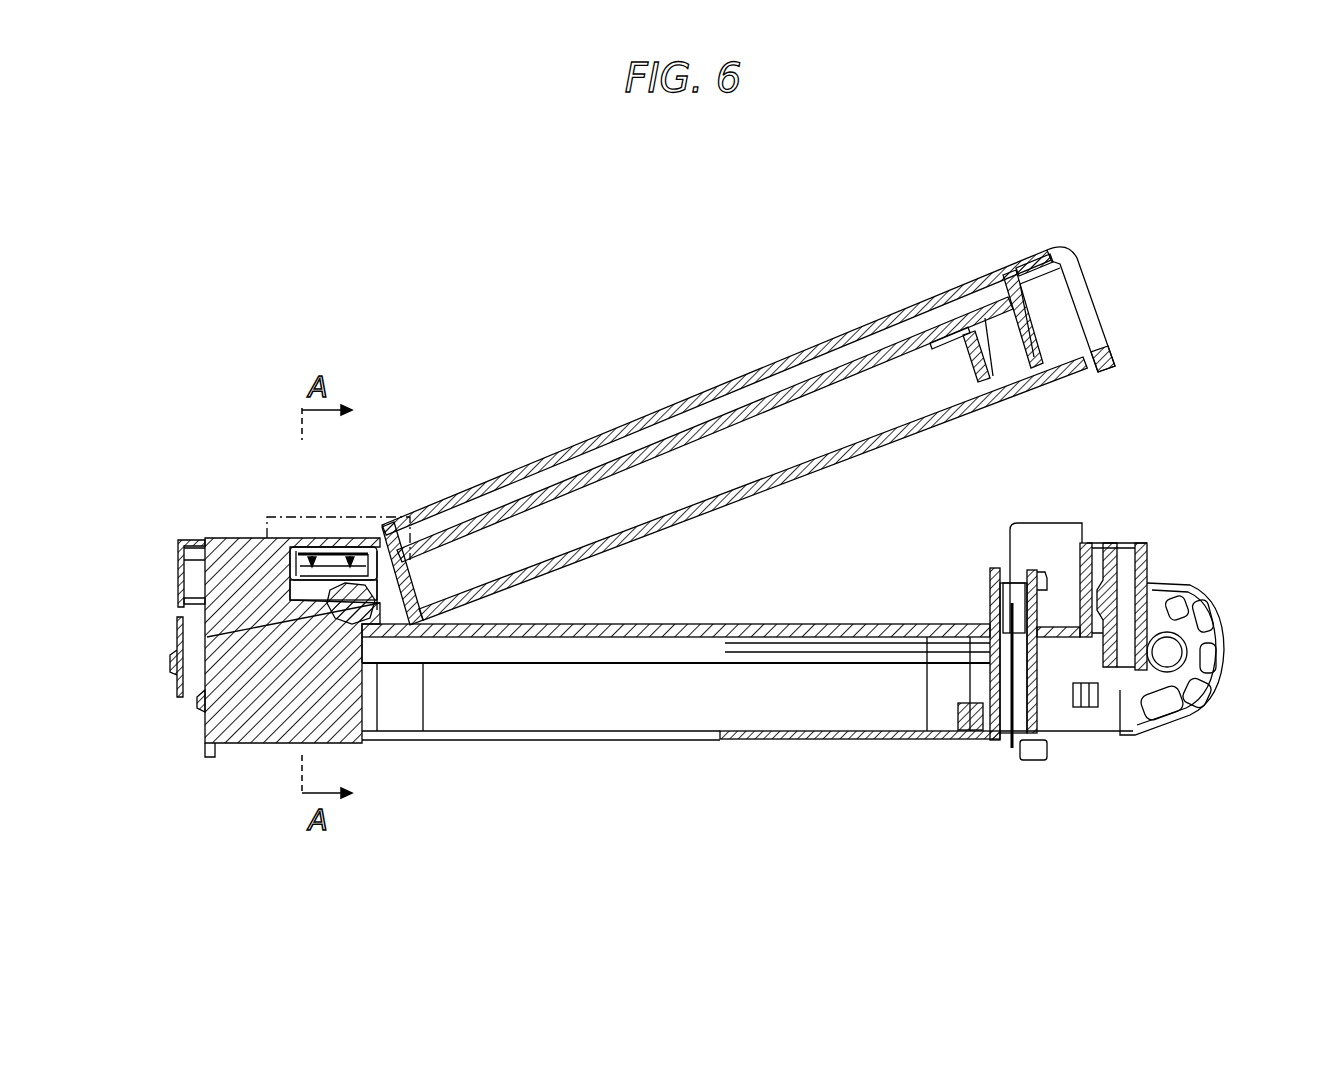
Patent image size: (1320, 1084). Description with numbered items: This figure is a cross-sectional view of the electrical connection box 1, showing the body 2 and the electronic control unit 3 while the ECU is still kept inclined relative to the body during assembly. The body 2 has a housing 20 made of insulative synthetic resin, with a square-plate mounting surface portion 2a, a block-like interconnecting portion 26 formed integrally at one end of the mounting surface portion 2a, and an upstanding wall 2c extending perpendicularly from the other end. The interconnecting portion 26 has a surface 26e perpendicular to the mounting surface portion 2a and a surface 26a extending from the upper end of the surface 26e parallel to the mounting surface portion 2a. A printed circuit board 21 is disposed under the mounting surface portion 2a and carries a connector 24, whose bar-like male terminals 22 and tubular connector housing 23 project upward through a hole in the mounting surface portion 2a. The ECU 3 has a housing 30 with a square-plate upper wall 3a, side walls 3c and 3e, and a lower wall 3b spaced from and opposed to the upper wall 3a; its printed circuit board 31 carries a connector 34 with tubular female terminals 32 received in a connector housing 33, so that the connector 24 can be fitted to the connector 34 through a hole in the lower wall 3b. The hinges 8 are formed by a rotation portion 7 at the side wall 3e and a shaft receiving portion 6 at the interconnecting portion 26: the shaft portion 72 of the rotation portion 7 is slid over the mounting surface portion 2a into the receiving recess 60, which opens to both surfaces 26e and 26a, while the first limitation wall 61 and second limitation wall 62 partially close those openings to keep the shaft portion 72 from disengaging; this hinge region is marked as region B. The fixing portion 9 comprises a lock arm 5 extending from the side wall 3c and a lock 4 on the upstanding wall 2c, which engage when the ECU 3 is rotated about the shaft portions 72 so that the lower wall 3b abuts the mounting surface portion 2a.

The electrical connection box 1 is at (1120, 205).
The body 2 is at (198, 731).
The mounting surface portion 2a is at (722, 625).
The upstanding wall 2c is at (1087, 690).
The electronic control unit (ECU) 3 is at (537, 440).
The upper wall 3a is at (772, 360).
The lower wall 3b is at (812, 462).
The side wall 3c is at (1030, 296).
The side wall 3e is at (345, 612).
The lock 4 is at (1150, 561).
The lock arm 5 is at (1108, 288).
The shaft receiving portion 6 is at (315, 552).
The rotation portion 7 is at (352, 556).
The hinge 8 is at (1228, 814).
The fixing portion 9 is at (1228, 906).
The housing 20 is at (245, 745).
The printed circuit board 21 is at (895, 740).
The male terminal 22 is at (1003, 712).
The connector housing 23 is at (988, 695).
The connector 24 is at (1002, 810).
The interconnecting portion 26 is at (200, 573).
The surface 26a is at (210, 538).
The surface 26e is at (427, 640).
The housing 30 is at (566, 452).
The printed circuit board 31 is at (893, 347).
The female terminal 32 is at (975, 325).
The connector housing 33 is at (1008, 272).
The connector 34 is at (1036, 190).
The receiving recess 60 is at (300, 573).
The first limitation wall 61 is at (410, 514).
The second limitation wall 62 is at (337, 556).
The shaft portion 72 is at (290, 600).
The region B is at (265, 506).